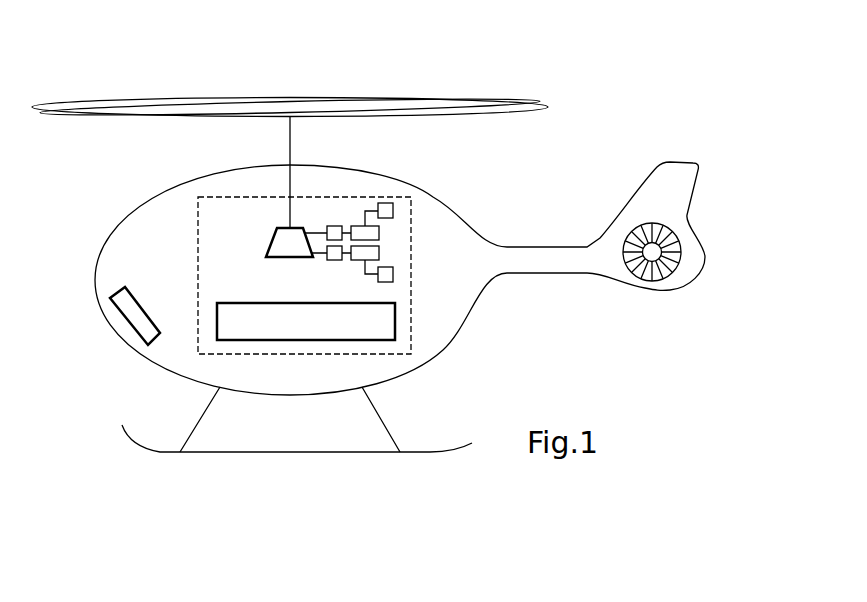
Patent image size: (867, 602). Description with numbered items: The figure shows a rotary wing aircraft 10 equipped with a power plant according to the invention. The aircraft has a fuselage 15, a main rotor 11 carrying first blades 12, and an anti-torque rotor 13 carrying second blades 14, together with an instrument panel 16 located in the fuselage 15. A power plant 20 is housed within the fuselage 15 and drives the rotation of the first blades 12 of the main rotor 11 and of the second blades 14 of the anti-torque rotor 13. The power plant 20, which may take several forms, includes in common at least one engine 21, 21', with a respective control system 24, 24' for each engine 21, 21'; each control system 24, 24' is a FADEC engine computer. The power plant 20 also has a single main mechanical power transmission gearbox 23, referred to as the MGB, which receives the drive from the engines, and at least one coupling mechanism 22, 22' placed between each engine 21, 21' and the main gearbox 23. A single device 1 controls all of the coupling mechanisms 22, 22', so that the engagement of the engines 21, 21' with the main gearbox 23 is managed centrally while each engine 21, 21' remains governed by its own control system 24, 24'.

The device for controlling the coupling mechanisms 1 is at (395, 322).
The rotary wing aircraft 10 is at (566, 349).
The main rotor 11 is at (517, 102).
The first blades 12 is at (194, 112).
The anti-torque rotor 13 is at (668, 222).
The second blades 14 is at (633, 237).
The fuselage 15 is at (477, 309).
The instrument panel 16 is at (138, 297).
The power plant 20 is at (198, 238).
The engine 21 is at (417, 205).
The engine 21' is at (414, 265).
The coupling mechanism 22 is at (341, 184).
The coupling mechanism 22' is at (304, 267).
The main mechanical power transmission gearbox 23 is at (275, 240).
The control system 24 is at (397, 175).
The control system 24' is at (423, 291).